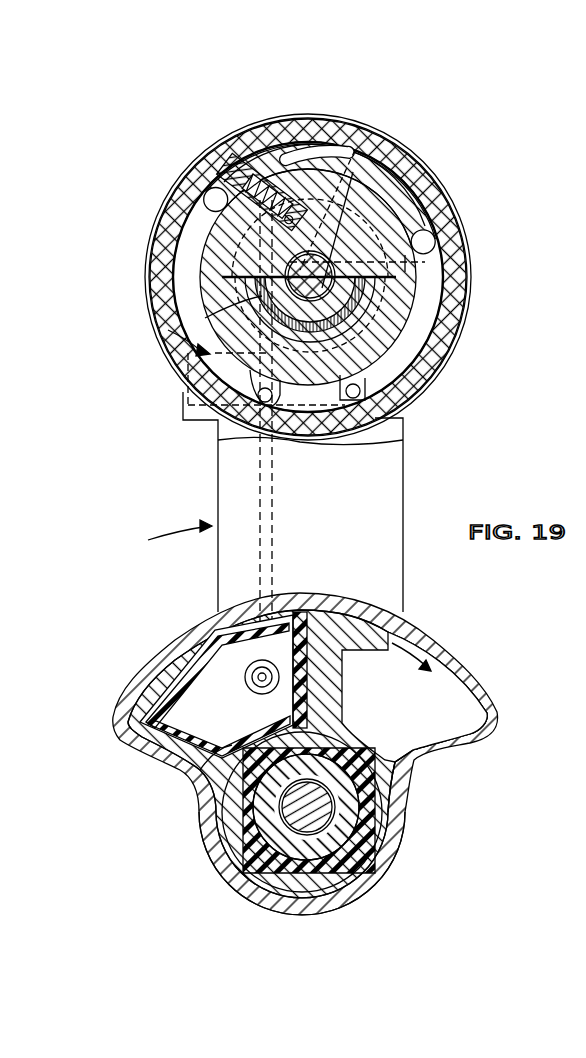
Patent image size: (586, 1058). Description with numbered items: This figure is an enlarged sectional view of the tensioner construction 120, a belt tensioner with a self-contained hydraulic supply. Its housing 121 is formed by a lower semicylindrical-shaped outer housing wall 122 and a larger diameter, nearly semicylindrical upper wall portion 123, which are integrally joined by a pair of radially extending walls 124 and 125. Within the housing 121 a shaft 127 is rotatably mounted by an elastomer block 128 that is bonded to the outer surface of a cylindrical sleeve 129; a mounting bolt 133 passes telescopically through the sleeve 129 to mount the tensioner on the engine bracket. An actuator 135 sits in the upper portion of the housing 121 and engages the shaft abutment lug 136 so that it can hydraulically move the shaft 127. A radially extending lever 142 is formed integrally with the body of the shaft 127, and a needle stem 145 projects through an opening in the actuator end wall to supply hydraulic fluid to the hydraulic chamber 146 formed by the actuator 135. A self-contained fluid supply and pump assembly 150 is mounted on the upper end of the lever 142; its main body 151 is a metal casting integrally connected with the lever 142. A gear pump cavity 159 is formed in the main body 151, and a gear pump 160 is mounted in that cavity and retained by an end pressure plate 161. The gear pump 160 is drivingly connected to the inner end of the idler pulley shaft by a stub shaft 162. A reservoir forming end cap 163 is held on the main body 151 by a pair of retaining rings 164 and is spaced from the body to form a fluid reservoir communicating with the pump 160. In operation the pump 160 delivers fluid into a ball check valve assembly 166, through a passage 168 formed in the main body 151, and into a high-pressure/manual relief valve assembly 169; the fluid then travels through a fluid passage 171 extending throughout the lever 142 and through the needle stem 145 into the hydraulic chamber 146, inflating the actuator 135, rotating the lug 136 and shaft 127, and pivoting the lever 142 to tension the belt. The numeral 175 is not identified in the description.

The tensioner construction 120 is at (155, 537).
The housing 121 is at (440, 634).
The lower semicylindrical-shaped outer housing wall 122 is at (342, 905).
The upper wall portion 123 is at (212, 628).
The radially extending wall 124 is at (430, 753).
The radially extending wall 125 is at (165, 755).
The shaft 127 is at (232, 822).
The elastomer block 128 is at (360, 843).
The cylindrical sleeve 129 is at (348, 806).
The mounting bolt 133 is at (300, 830).
The actuator 135 is at (152, 740).
The shaft abutment lug 136 is at (365, 625).
The lever 142 is at (403, 497).
The needle stem 145 is at (255, 684).
The hydraulic chamber 146 is at (186, 720).
The fluid supply and pump assembly 150 is at (426, 156).
The main body 151 is at (386, 218).
The gear pump cavity 159 is at (395, 335).
The gear pump 160 is at (380, 295).
The end pressure plate 161 is at (420, 262).
The stub shaft 162 is at (333, 219).
The reservoir forming end cap 163 is at (462, 229).
The retaining rings 164 is at (365, 125).
The ball check valve assembly 166 is at (258, 208).
The passage 168 is at (205, 320).
The high-pressure/manual relief valve assembly 169 is at (168, 330).
The fluid passage 171 is at (273, 527).
The locking pin 175 is at (360, 392).